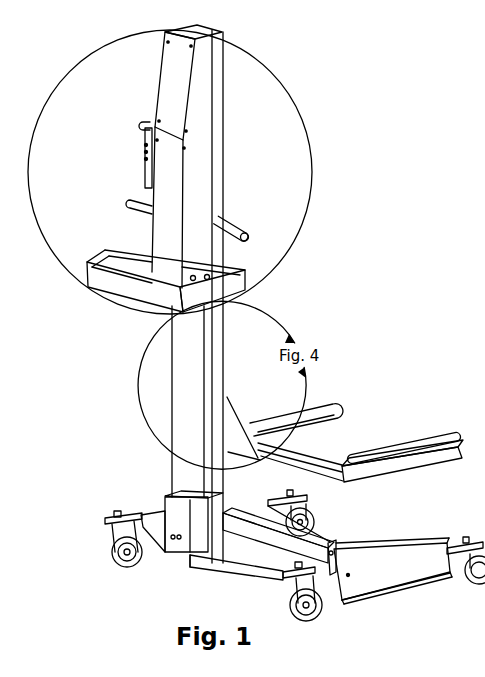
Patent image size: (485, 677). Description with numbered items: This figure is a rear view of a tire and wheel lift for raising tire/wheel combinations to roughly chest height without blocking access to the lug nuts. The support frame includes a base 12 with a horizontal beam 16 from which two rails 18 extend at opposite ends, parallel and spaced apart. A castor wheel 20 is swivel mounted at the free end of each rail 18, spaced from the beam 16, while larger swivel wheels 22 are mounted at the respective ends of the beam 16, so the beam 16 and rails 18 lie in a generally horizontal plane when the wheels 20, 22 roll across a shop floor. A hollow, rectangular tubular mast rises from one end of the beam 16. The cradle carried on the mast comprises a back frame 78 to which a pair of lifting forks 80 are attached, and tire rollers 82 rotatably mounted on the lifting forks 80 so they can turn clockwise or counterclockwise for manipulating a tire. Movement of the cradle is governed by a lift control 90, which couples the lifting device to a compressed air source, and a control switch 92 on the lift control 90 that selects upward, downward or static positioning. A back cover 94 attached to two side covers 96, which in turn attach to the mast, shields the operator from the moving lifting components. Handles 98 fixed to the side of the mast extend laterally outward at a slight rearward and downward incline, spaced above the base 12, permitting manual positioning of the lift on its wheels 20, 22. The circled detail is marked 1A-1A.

The base 12 is at (400, 552).
The horizontal beam 16 is at (329, 537).
The rails 18 is at (419, 590).
The castor wheel 20 is at (326, 514).
The swivel wheels 22 is at (134, 577).
The back frame 78 is at (308, 452).
The lifting forks 80 is at (346, 415).
The tire rollers 82 is at (319, 401).
The lift control 90 is at (143, 168).
The control switch 92 is at (141, 121).
The back cover 94 is at (158, 58).
The side covers 96 is at (213, 117).
The handles 98 is at (125, 207).
The section line 1A-1A is at (347, 113).